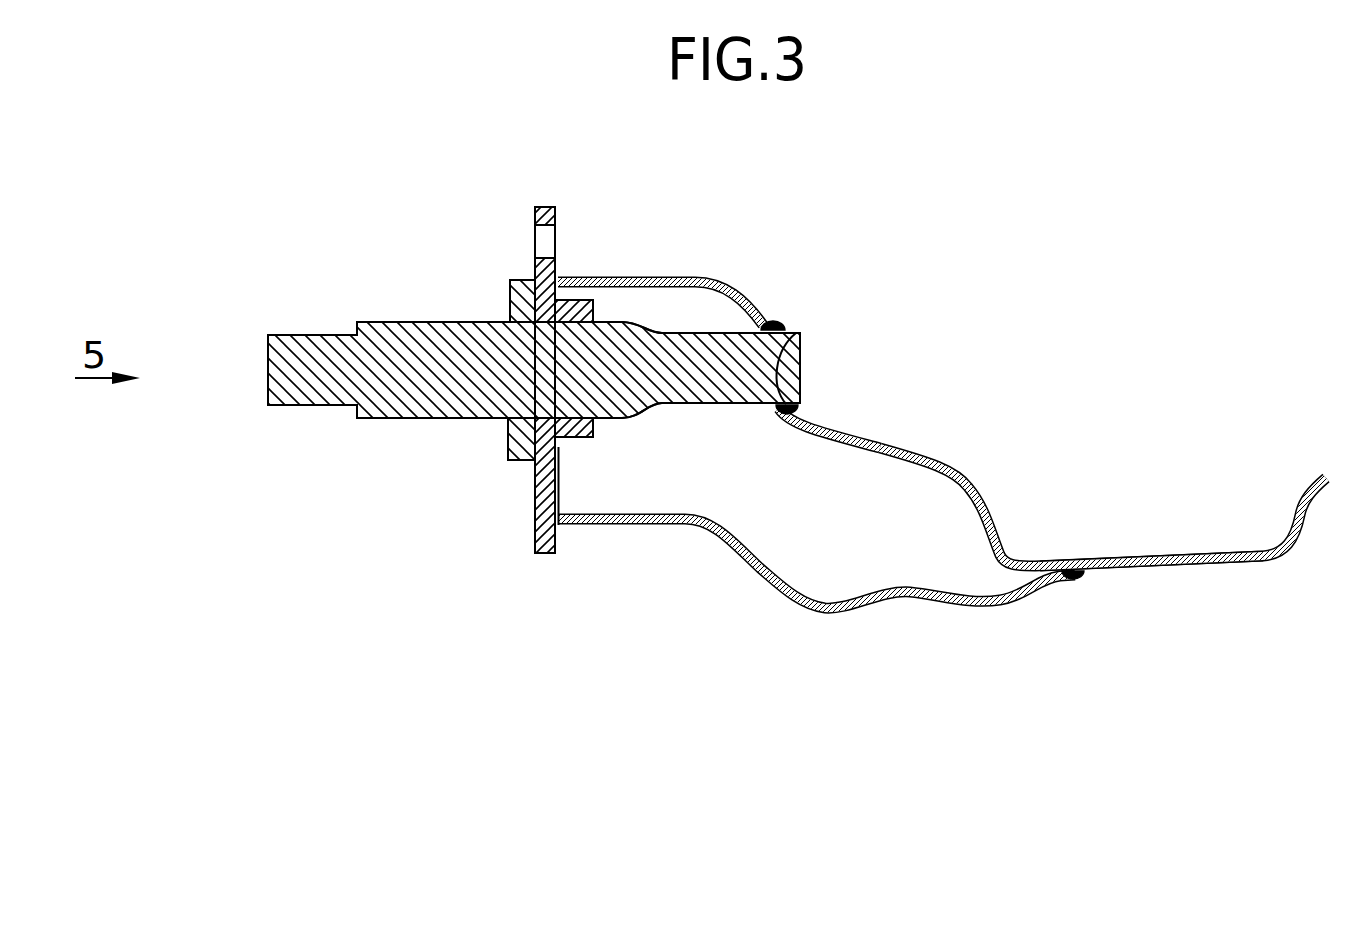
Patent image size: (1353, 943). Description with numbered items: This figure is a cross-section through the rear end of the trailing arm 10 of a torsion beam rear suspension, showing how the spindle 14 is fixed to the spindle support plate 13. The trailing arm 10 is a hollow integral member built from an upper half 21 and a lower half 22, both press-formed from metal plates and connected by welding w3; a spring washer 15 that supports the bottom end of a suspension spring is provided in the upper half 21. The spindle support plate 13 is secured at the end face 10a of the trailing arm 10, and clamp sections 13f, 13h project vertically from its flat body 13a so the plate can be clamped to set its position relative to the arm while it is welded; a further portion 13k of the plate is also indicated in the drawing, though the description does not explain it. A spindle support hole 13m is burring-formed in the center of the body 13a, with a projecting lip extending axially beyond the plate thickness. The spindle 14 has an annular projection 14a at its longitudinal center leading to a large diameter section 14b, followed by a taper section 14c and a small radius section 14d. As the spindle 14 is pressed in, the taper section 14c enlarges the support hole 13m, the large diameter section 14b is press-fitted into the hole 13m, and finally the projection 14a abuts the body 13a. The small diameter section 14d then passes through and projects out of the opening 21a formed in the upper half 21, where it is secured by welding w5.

The trailing arm 10 is at (983, 468).
The end face 10a is at (547, 515).
The spindle support plate 13 is at (528, 498).
The flat body 13a is at (535, 483).
The clamp section 13f is at (547, 207).
The clamp section 13h is at (547, 548).
The bracket plate notch 13k is at (535, 238).
The spindle support hole 13m is at (575, 323).
The spindle 14 is at (383, 320).
The annular projection 14a is at (515, 307).
The large diameter section 14b is at (604, 322).
The taper section 14c is at (640, 418).
The small radius section 14d is at (711, 406).
The washer 15 is at (1140, 556).
The upper half 21 is at (655, 277).
The opening 21a is at (788, 350).
The lower half 22 is at (715, 535).
The welding w3 is at (1082, 577).
The welding w5 is at (776, 318).